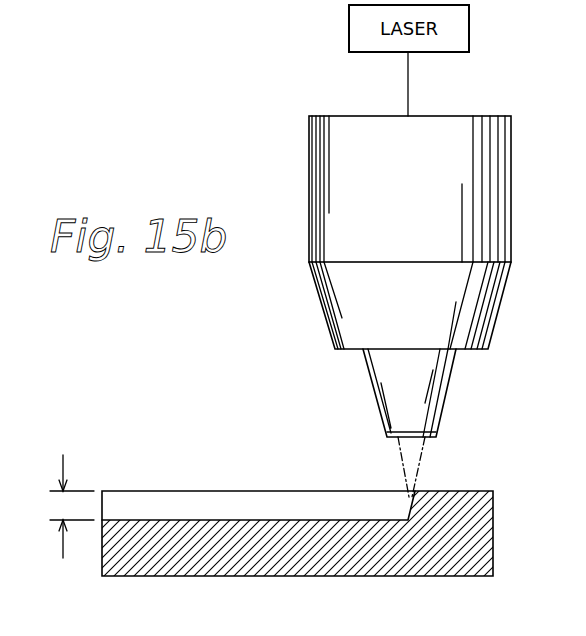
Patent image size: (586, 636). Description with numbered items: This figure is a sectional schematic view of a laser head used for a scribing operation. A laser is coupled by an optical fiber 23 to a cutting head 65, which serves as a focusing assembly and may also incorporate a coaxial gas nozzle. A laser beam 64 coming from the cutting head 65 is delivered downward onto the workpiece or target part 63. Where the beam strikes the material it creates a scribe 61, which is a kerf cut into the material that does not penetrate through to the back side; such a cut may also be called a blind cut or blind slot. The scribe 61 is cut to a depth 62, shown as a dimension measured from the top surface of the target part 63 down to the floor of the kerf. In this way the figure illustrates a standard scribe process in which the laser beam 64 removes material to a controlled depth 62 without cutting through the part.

The optical fiber 23 is at (408, 80).
The cutting head 65 is at (309, 153).
The laser beam 64 is at (410, 462).
The target part 63 is at (465, 502).
The scribe 61 is at (302, 497).
The depth 62 is at (72, 495).